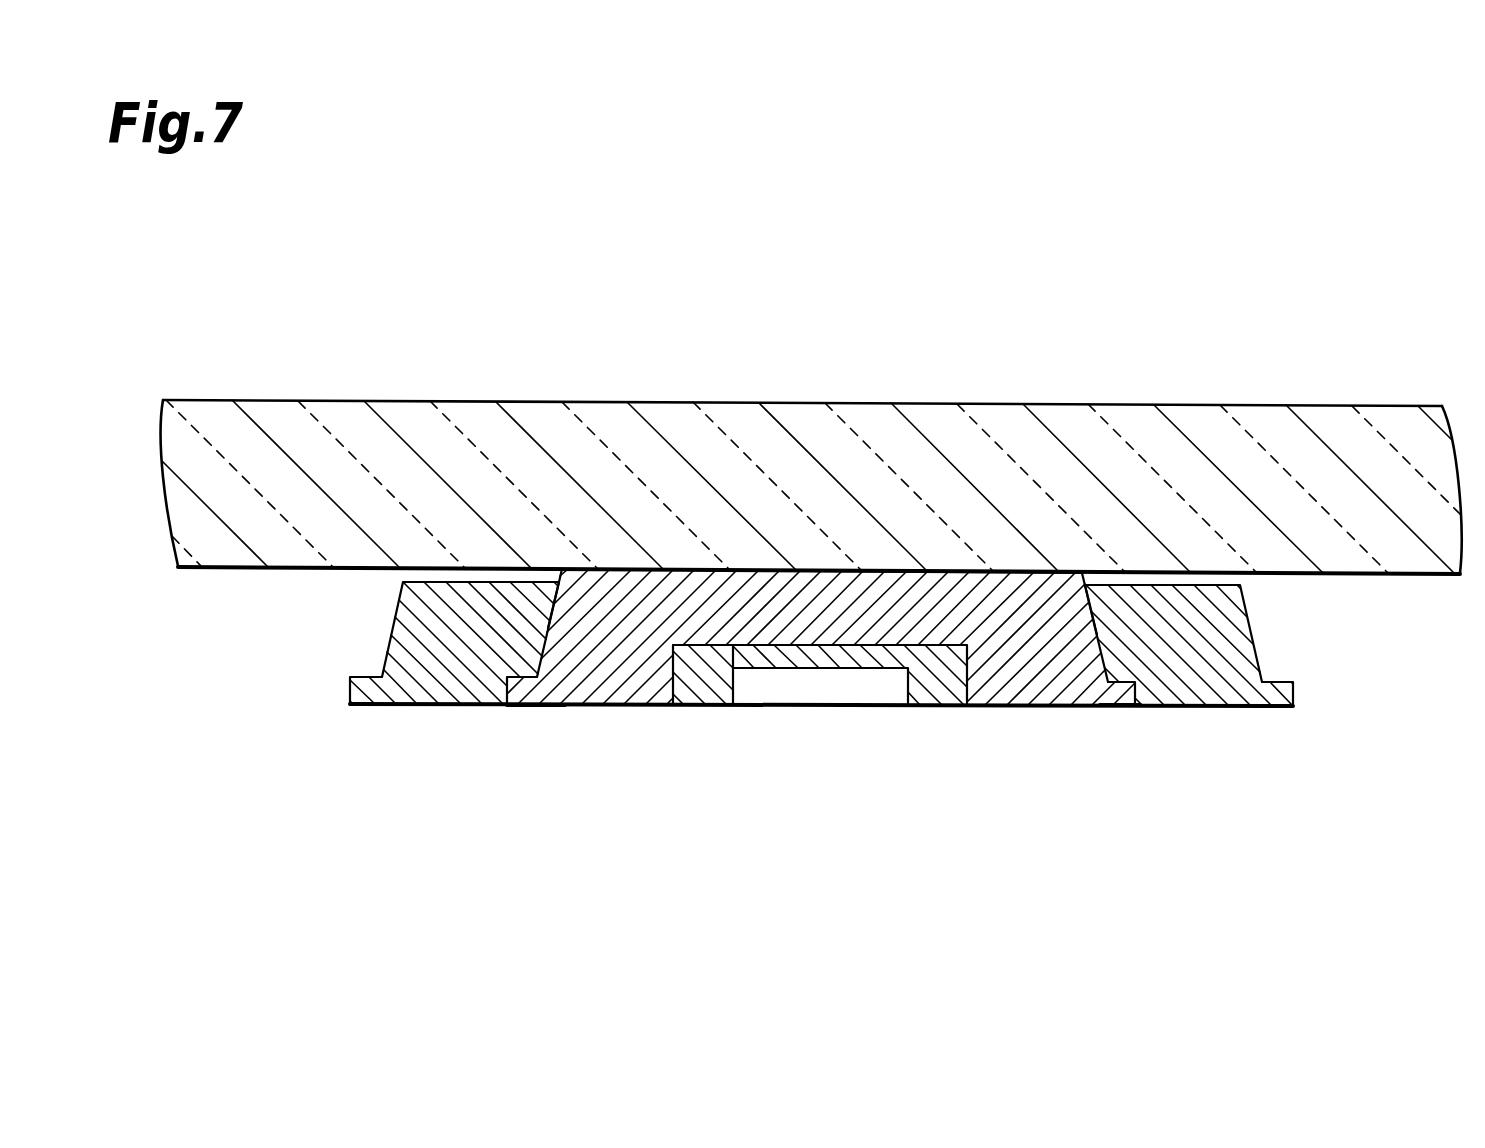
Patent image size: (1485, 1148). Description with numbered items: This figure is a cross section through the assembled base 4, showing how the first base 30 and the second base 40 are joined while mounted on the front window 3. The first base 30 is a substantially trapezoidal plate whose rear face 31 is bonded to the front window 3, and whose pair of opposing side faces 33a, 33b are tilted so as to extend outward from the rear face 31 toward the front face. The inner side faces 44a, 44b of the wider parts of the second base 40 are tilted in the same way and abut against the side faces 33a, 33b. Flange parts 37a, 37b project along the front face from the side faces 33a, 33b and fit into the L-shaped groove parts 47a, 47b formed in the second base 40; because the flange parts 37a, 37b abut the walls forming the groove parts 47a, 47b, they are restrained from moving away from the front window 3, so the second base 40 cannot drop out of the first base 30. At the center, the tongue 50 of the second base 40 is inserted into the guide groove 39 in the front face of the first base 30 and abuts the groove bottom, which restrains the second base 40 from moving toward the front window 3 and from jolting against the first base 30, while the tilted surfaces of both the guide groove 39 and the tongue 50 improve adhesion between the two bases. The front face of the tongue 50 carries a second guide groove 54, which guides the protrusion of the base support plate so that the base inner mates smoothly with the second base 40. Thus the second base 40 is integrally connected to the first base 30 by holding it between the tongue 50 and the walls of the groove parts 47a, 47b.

The front window 3 is at (782, 506).
The base 4 is at (788, 582).
The first base 30 is at (805, 557).
The rear face 31 is at (796, 562).
The side face 33a is at (1088, 647).
The side face 33b is at (547, 628).
The flange part 37a is at (1123, 708).
The flange part 37b is at (518, 706).
The guide groove 39 is at (702, 648).
The second base 40 is at (827, 587).
The inner side face 44a is at (1092, 647).
The inner side face 44b is at (547, 628).
The groove part 47a is at (1117, 708).
The groove part 47b is at (538, 706).
The tongue 50 is at (808, 774).
The guide groove 54 is at (823, 670).